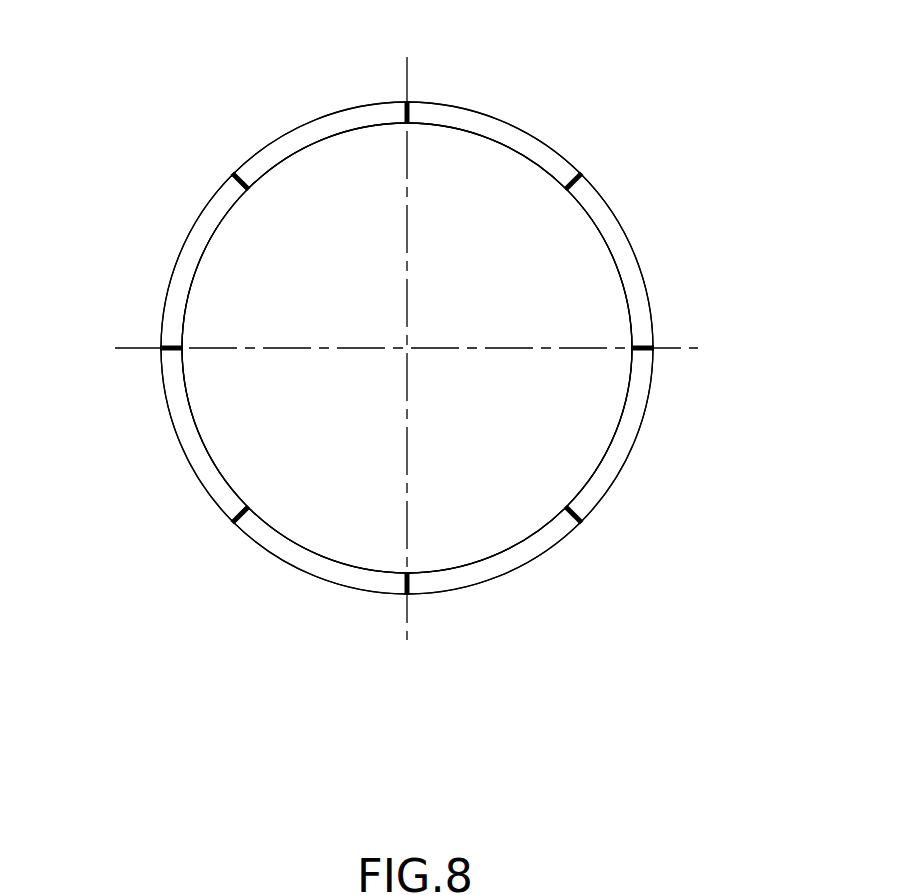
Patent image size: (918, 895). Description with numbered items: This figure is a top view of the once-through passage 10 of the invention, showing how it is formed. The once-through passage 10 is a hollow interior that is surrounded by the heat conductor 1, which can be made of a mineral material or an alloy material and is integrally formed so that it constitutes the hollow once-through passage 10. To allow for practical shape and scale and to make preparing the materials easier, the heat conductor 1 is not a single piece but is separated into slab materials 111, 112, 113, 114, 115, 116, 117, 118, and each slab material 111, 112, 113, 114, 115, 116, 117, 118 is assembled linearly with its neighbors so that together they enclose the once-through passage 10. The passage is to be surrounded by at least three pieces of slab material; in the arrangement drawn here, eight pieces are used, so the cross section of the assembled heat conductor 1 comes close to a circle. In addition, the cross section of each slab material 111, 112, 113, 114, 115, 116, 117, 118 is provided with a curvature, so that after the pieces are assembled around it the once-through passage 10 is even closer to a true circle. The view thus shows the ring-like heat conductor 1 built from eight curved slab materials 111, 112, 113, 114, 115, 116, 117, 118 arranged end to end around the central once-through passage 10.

The heat conductor 1 is at (688, 392).
The once-through passage 10 is at (443, 322).
The slab material 111 is at (495, 113).
The slab material 112 is at (632, 245).
The slab material 113 is at (637, 442).
The slab material 114 is at (518, 572).
The slab material 115 is at (310, 575).
The slab material 116 is at (175, 437).
The slab material 117 is at (175, 260).
The slab material 118 is at (312, 115).